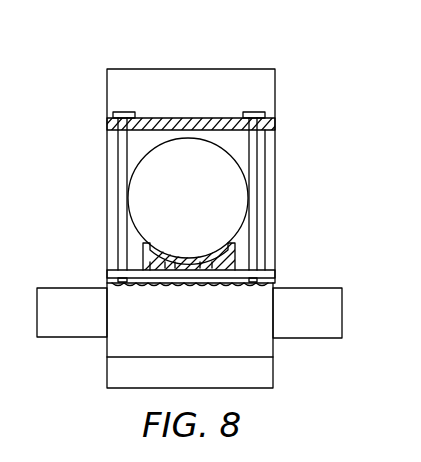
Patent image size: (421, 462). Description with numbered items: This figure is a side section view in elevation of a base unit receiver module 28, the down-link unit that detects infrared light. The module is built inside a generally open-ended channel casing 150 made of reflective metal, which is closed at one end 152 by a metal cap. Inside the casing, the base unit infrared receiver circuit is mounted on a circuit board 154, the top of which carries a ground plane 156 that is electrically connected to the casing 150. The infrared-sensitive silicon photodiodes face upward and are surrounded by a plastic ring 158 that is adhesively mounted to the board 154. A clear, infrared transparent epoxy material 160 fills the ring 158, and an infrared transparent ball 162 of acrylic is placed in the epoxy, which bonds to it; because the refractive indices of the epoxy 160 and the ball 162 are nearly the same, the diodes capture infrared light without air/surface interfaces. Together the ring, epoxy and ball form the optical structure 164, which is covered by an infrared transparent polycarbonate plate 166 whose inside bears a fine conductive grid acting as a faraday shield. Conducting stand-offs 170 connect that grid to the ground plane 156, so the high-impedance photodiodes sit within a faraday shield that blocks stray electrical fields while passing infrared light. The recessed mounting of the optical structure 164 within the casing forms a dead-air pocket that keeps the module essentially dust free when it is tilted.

The base unit receiver module 28 is at (283, 192).
The channel casing 150 is at (275, 90).
The closed end 152 is at (288, 351).
The circuit board 154 is at (227, 281).
The ground plane 156 is at (112, 268).
The plastic ring 158 is at (236, 249).
The infrared transparent epoxy material 160 is at (157, 280).
The infrared transparent ball 162 is at (150, 190).
The optical structure 164 is at (225, 146).
The infrared transparent plastic plate 166 is at (200, 118).
The conducting stand-offs 170 is at (120, 157).